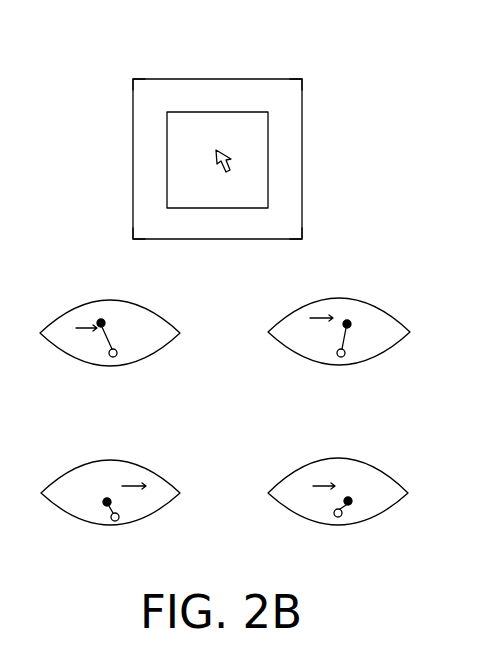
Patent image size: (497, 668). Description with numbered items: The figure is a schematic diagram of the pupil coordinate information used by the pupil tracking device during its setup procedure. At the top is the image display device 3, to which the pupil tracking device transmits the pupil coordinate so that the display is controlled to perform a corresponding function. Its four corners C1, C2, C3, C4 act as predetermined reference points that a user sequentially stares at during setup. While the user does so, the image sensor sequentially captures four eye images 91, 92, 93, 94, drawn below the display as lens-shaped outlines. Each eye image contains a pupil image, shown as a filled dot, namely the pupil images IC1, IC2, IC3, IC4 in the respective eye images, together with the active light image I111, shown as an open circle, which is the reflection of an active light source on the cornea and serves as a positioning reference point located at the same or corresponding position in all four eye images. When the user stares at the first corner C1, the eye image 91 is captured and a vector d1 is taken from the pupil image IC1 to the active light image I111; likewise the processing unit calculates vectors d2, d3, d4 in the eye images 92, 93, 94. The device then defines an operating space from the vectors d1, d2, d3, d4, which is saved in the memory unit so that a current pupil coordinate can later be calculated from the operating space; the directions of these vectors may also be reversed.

The image display device 3 is at (133, 158).
The first corner C1 is at (133, 79).
The second corner C2 is at (302, 79).
The third corner C3 is at (133, 239).
The fourth corner C4 is at (302, 239).
The first eye image 91 is at (150, 307).
The second eye image 92 is at (290, 313).
The third eye image 93 is at (162, 476).
The fourth eye image 94 is at (290, 474).
The pupil image IC1 is at (99, 319).
The pupil image IC2 is at (350, 322).
The pupil image IC3 is at (105, 499).
The pupil image IC4 is at (351, 498).
The vector d1 is at (88, 340).
The vector d2 is at (320, 332).
The vector d3 is at (133, 498).
The vector d4 is at (323, 498).
The active light image I111 is at (333, 552).